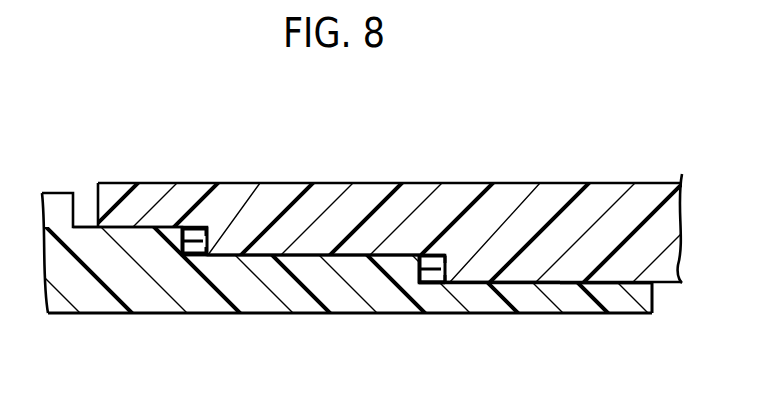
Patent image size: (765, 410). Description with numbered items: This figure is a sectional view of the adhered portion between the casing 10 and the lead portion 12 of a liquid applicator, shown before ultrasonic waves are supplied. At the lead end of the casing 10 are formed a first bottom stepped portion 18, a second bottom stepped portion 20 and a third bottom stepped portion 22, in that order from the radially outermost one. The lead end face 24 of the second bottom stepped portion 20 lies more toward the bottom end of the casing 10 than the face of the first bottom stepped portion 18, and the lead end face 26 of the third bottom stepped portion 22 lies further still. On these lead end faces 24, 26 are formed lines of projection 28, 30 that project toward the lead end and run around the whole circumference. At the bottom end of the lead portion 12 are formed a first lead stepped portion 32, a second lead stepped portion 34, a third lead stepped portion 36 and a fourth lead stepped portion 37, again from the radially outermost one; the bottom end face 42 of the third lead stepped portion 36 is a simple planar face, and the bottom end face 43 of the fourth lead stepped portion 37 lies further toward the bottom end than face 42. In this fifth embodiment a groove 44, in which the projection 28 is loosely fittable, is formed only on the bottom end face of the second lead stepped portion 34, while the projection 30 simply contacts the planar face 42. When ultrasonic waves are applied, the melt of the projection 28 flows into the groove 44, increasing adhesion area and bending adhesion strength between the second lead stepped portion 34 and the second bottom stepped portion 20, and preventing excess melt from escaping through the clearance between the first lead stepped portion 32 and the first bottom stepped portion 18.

The casing 10 is at (513, 182).
The lead portion 12 is at (108, 314).
The first bottom stepped portion 18 is at (108, 198).
The second bottom stepped portion 20 is at (272, 243).
The third bottom stepped portion 22 is at (528, 268).
The lead end face of second bottom stepped portion 24 is at (222, 256).
The lead end face of third bottom stepped portion 26 is at (441, 284).
The projection 28 is at (207, 231).
The projection 30 is at (430, 253).
The first lead stepped portion 32 is at (63, 205).
The second lead stepped portion 34 is at (182, 250).
The third lead stepped portion 36 is at (398, 267).
The fourth lead stepped portion 37 is at (617, 299).
The bottom end face of third lead stepped portion 42 is at (437, 284).
The bottom end face of fourth lead stepped portion 43 is at (652, 293).
The groove 44 is at (183, 228).